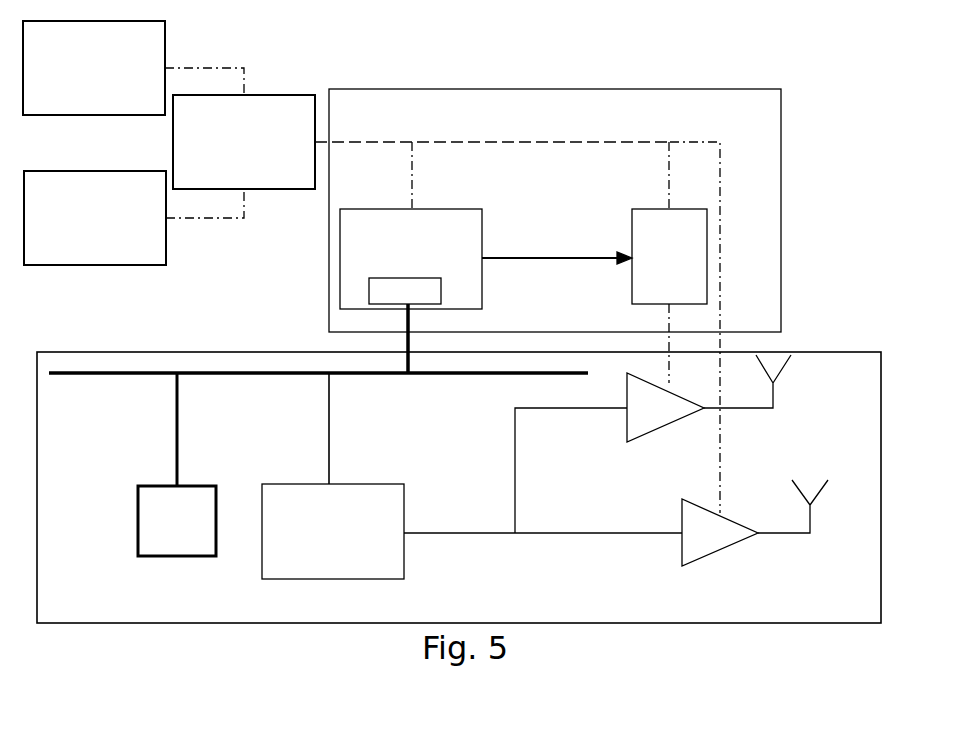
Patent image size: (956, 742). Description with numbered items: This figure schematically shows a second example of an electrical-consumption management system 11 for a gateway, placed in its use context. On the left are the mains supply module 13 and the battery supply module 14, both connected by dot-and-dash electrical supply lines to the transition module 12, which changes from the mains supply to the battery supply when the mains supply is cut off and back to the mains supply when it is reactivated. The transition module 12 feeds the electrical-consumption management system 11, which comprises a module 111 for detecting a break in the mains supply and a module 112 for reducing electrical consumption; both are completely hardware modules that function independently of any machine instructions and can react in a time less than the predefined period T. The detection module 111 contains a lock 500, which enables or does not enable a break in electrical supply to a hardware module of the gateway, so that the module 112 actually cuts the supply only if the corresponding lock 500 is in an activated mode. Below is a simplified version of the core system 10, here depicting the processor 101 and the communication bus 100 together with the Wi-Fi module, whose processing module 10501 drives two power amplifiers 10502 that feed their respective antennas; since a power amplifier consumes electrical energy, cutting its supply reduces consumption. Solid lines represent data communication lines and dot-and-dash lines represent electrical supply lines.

The core system 10 is at (768, 624).
The electrical-consumption management system 11 is at (765, 88).
The transition module 12 is at (231, 158).
The mains supply module 13 is at (82, 84).
The battery supply module 14 is at (82, 234).
The communication bus 100 is at (274, 376).
The processor 101 is at (159, 521).
The module for detecting a break in the mains supply 111 is at (392, 273).
The module for reducing electrical consumption 112 is at (650, 273).
The lock 500 is at (405, 325).
The processing module 10501 is at (302, 546).
The power amplifier 10502 is at (664, 425).